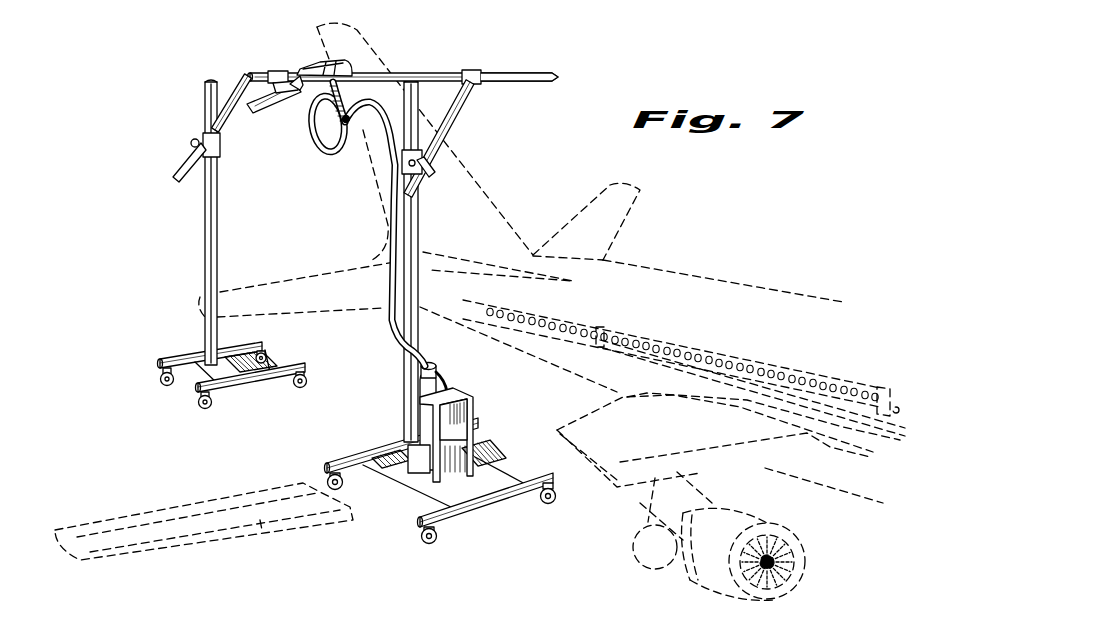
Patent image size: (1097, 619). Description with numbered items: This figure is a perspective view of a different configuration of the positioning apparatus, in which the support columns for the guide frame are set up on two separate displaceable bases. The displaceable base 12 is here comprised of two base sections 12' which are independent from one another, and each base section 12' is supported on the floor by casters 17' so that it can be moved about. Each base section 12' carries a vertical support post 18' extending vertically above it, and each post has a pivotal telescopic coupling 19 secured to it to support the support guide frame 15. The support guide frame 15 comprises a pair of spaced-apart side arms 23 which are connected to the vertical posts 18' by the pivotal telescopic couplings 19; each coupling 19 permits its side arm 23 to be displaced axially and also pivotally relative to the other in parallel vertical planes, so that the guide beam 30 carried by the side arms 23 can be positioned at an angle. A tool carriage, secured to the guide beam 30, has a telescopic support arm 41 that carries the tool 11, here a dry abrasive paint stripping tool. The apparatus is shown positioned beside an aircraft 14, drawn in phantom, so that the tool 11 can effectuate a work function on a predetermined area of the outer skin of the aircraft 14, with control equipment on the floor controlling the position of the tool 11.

The tool 11 is at (316, 48).
The displaceable base 12 is at (392, 408).
The base section 12' is at (356, 450).
The aircraft 14 is at (677, 283).
The support guide frame 15 is at (420, 65).
The casters 17' is at (335, 447).
The vertical support post 18' is at (342, 261).
The pivotal telescopic coupling 19 is at (222, 147).
The side arm 23 is at (233, 93).
The guide beam 30 is at (515, 72).
The telescopic support arm 41 is at (293, 86).